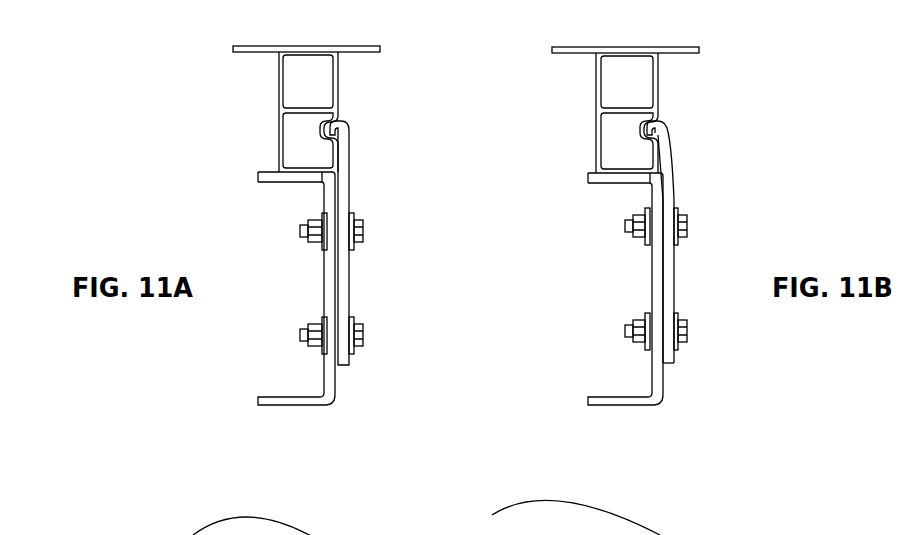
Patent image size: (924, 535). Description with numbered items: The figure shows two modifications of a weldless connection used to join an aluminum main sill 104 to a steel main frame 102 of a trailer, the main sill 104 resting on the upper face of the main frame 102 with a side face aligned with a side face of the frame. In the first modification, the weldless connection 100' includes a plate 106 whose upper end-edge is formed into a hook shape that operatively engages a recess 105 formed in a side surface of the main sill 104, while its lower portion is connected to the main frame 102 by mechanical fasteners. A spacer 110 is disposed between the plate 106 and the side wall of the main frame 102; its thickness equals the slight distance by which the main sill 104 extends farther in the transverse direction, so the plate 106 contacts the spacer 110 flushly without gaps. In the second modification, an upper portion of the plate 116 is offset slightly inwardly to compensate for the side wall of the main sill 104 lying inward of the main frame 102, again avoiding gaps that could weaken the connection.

In FIG. 11A, the weldless connection 100' is at (412, 260).
In FIG. 11A, the main frame 102 is at (278, 410).
In FIG. 11B, the main frame 102 is at (635, 404).
In FIG. 11A, the main sill 104 is at (342, 90).
In FIG. 11B, the main sill 104 is at (660, 88).
In FIG. 11A, the recess 105 is at (318, 140).
In FIG. 11B, the recess 105 is at (632, 134).
In FIG. 11A, the plate 106 is at (350, 167).
In FIG. 11A, the spacer 110 is at (340, 323).
In FIG. 11B, the plate 116 is at (677, 169).